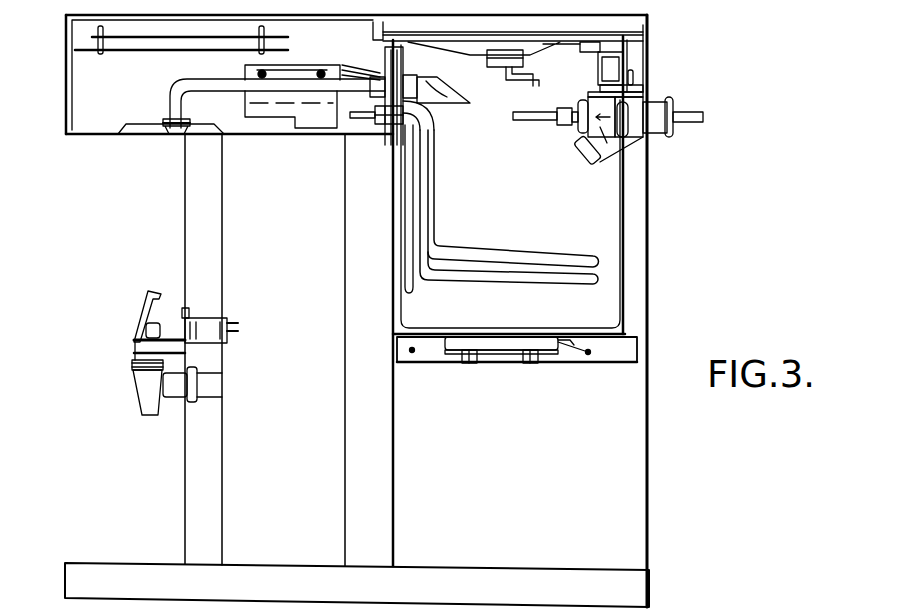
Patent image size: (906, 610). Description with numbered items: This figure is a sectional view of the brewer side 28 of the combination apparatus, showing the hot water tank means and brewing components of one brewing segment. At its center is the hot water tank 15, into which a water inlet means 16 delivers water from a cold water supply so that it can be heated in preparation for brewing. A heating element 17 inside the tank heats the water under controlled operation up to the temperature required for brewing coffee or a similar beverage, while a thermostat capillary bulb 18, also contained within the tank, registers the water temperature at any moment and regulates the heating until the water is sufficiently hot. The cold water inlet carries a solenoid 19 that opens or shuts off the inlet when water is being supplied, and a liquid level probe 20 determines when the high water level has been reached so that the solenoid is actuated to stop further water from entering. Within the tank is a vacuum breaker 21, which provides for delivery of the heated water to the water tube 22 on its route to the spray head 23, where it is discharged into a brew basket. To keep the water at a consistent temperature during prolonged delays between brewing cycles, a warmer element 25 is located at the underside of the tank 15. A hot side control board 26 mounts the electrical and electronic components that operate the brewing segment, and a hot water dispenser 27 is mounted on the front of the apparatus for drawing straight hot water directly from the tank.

The hot water tank 15 is at (623, 215).
The water inlet means 16 is at (653, 98).
The heating element 17 is at (484, 250).
The thermostat capillary bulb 18 is at (414, 292).
The solenoid 19 is at (653, 136).
The liquid level probe 20 is at (517, 98).
The vacuum breaker 21 is at (463, 91).
The water tube 22 is at (170, 90).
The spray head 23 is at (180, 137).
The warmer element 25 is at (509, 347).
The hot side control board 26 is at (184, 42).
The hot water dispenser 27 is at (122, 361).
The brewer side 28 is at (647, 19).